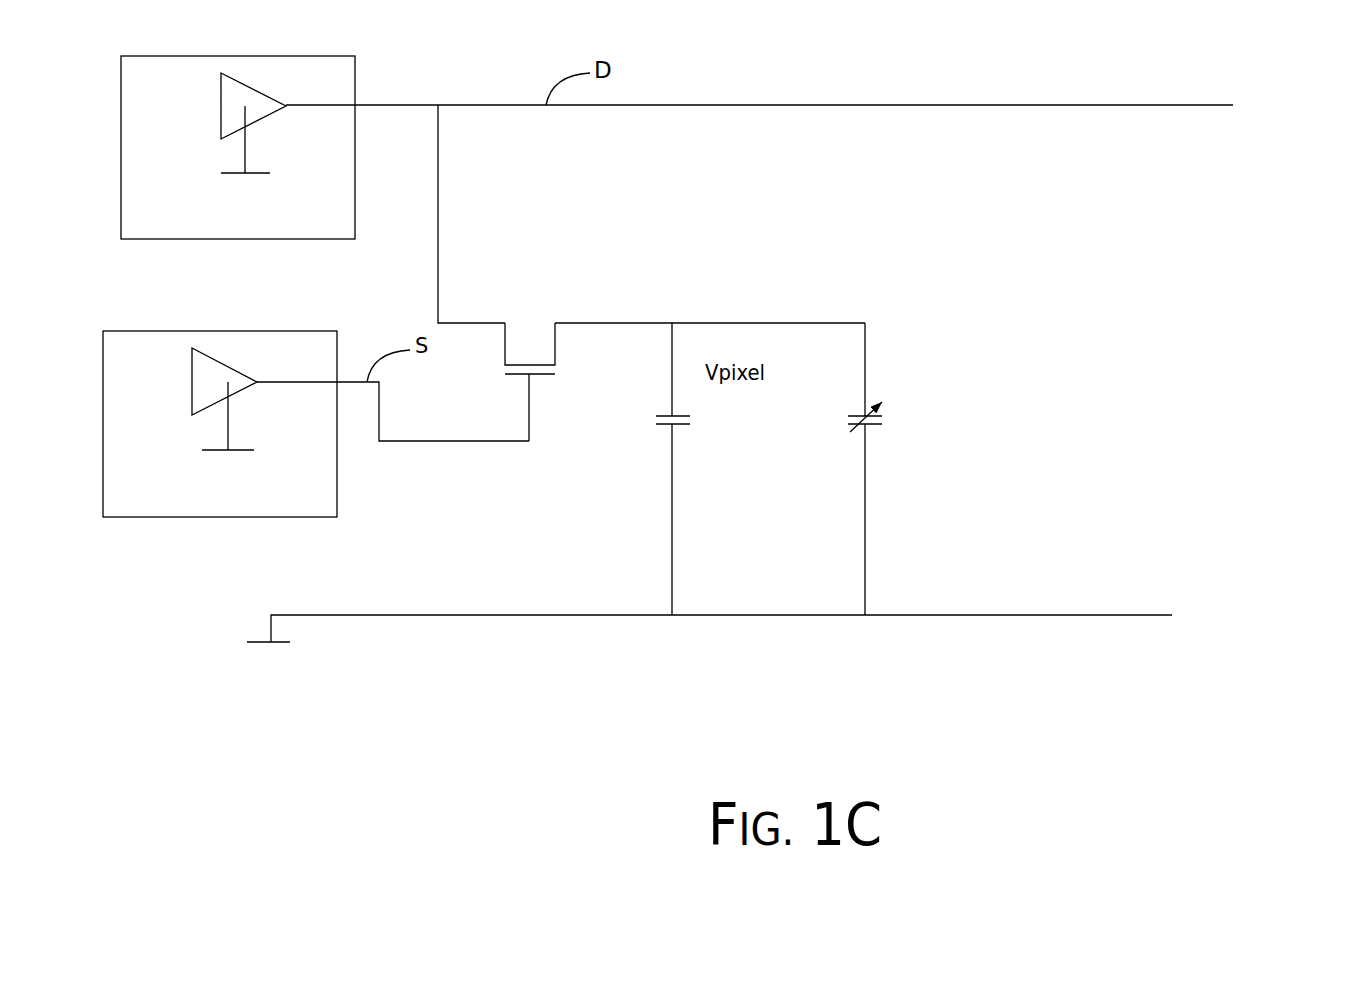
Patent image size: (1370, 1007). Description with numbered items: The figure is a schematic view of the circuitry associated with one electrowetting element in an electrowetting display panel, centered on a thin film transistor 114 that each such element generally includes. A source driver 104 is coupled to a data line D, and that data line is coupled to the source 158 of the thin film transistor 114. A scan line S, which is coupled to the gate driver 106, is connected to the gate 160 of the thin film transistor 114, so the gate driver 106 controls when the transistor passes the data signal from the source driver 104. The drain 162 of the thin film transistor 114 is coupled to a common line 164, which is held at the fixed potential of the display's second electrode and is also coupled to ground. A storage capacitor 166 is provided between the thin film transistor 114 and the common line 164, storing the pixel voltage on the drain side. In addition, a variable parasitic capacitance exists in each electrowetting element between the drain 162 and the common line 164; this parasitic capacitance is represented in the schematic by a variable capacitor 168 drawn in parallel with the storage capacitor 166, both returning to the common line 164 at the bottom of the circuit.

The source driver 104 is at (254, 53).
The gate driver 106 is at (253, 327).
The thin film transistor 114 is at (522, 317).
The source 158 is at (480, 340).
The gate 160 is at (555, 392).
The drain 162 is at (571, 308).
The common line 164 is at (412, 617).
The storage capacitor 166 is at (645, 452).
The variable capacitor 168 is at (842, 447).